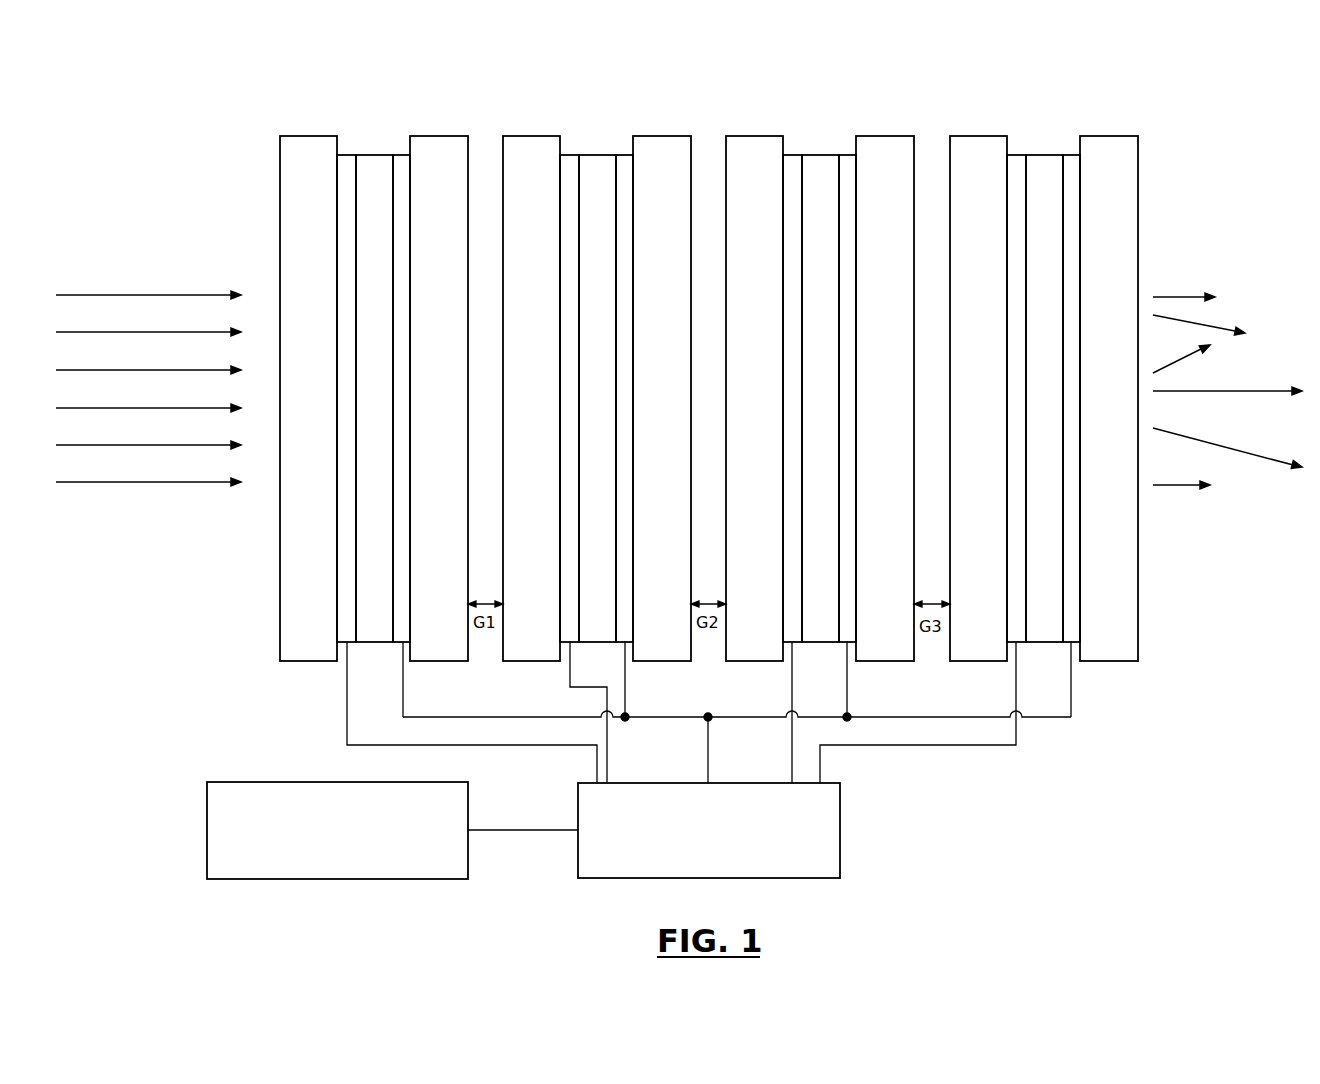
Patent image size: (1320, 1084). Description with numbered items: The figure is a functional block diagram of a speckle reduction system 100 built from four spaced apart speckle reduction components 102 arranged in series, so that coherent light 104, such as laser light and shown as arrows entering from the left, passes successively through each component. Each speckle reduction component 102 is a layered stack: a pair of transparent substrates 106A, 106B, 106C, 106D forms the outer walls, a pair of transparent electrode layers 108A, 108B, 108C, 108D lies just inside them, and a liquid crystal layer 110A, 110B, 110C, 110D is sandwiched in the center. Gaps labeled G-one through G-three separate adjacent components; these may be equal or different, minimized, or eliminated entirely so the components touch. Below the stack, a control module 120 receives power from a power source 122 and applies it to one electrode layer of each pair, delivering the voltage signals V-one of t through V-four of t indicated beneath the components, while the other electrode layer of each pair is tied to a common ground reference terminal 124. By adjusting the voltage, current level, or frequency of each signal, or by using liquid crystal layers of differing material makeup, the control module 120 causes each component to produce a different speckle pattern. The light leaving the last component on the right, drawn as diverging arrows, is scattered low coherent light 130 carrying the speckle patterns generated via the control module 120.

The speckle reduction system 100 is at (128, 104).
The speckle reduction component 102 is at (282, 661).
The coherent light 104 is at (132, 293).
The pair of substrates 106A is at (280, 162).
The pair of substrates 106B is at (515, 137).
The pair of substrates 106C is at (738, 137).
The pair of substrates 106D is at (963, 137).
The pair of electrode layers 108A is at (345, 153).
The pair of electrode layers 108B is at (575, 153).
The pair of electrode layers 108C is at (793, 153).
The pair of electrode layers 108D is at (1066, 153).
The liquid crystal layer 110A is at (373, 153).
The liquid crystal layer 110B is at (598, 153).
The liquid crystal layer 110C is at (820, 153).
The liquid crystal layer 110D is at (1044, 153).
The control module 120 is at (578, 802).
The power source 122 is at (235, 782).
The ground reference terminal 124 is at (712, 782).
The scattered low coherent light 130 is at (1192, 295).